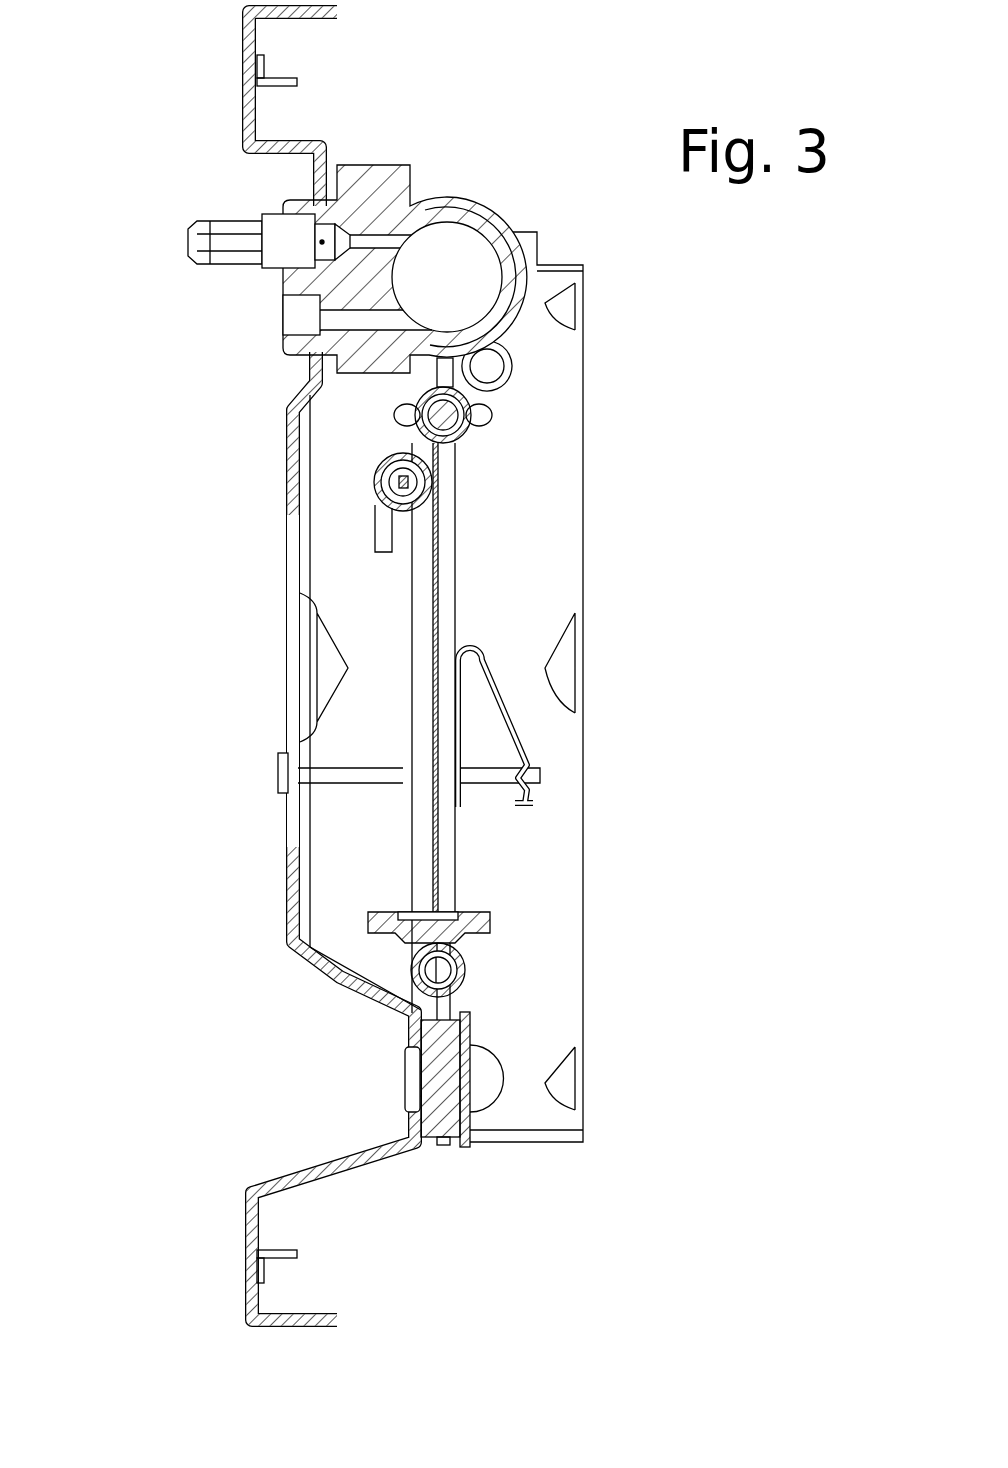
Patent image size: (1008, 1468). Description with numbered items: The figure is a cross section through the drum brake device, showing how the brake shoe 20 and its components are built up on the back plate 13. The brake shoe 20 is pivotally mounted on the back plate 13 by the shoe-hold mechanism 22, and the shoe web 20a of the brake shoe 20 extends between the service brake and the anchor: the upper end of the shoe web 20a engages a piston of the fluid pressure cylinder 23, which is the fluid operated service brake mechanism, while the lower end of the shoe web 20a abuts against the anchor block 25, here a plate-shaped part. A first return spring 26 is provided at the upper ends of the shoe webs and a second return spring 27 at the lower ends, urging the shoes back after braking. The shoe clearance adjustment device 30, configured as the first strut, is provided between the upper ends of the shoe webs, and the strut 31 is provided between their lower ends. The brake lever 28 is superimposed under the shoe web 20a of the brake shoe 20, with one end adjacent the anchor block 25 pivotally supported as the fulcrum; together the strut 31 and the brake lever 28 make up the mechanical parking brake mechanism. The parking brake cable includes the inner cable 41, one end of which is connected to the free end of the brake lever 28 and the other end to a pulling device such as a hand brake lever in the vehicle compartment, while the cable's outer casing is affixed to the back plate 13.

The back plate 13 is at (271, 458).
The brake shoe 20 is at (602, 533).
The shoe web 20a is at (447, 600).
The shoe-hold mechanism 22 is at (557, 793).
The fluid pressure cylinder 23 is at (478, 192).
The anchor block 25 is at (452, 1160).
The first return spring 26 is at (517, 340).
The second return spring 27 is at (465, 966).
The brake lever 28 is at (417, 723).
The shoe clearance adjustment device 30 is at (519, 425).
The strut 31 is at (490, 928).
The inner cable 41 is at (383, 487).